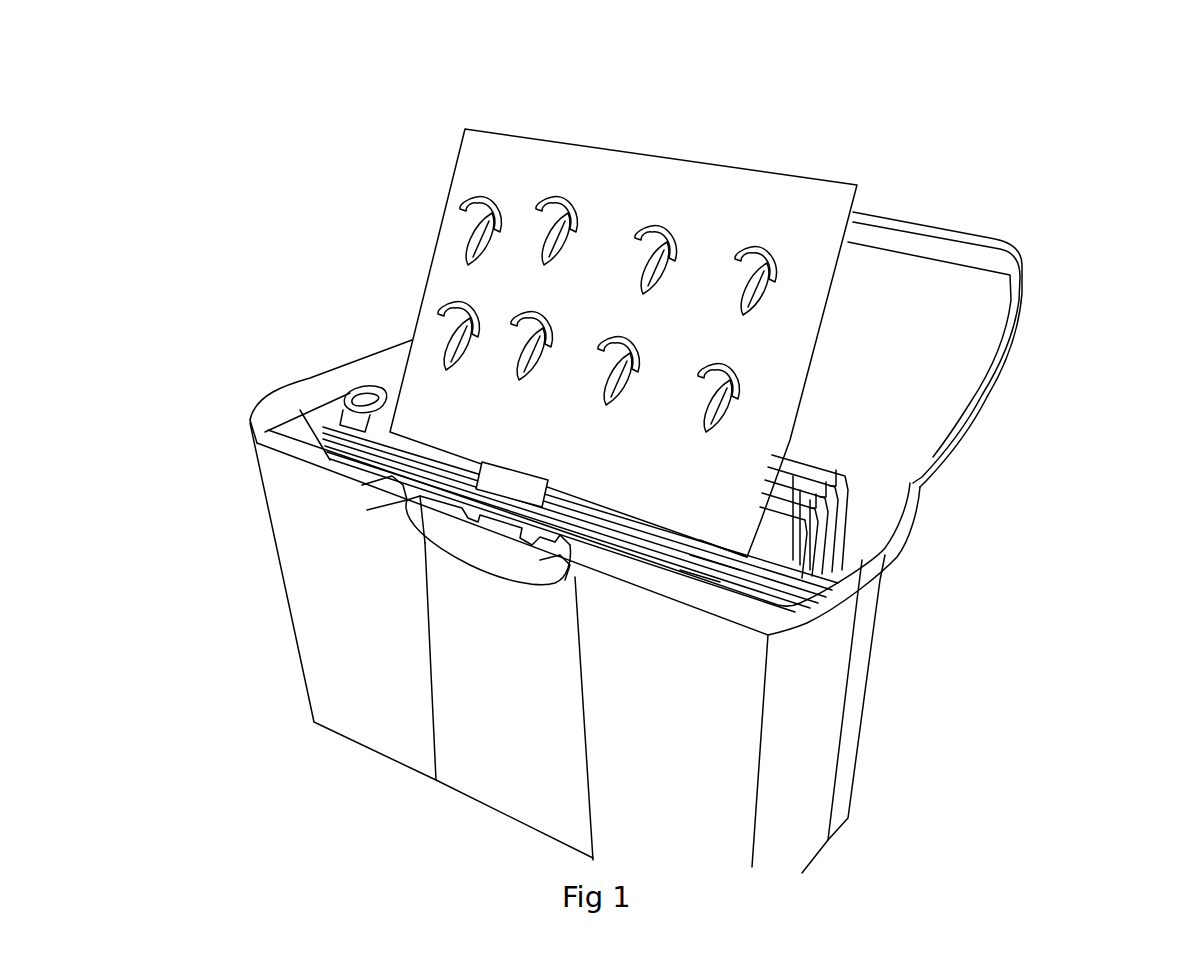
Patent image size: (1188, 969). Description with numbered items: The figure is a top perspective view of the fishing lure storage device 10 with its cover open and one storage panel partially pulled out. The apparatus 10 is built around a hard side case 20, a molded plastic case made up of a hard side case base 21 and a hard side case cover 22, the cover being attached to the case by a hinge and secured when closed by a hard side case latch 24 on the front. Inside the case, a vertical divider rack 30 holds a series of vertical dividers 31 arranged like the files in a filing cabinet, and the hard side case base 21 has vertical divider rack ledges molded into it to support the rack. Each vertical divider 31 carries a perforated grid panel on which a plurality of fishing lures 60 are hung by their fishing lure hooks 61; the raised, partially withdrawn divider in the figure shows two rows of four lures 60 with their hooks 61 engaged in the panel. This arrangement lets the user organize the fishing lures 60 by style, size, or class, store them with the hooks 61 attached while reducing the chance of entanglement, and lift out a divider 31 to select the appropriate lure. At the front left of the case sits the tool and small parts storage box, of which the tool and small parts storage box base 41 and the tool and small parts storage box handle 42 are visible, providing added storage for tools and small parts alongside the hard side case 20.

The fishing lure storage device 10 is at (1112, 197).
The hard side case 20 is at (300, 708).
The hard side case base 21 is at (290, 615).
The hard side case cover 22 is at (968, 462).
The hard side case latch 24 is at (408, 537).
The vertical divider rack 30 is at (455, 150).
The vertical dividers 31 is at (806, 520).
The tool and small parts storage box base 41 is at (383, 386).
The tool and small parts storage box handle 42 is at (345, 392).
The fishing lures 60 is at (503, 330).
The fishing lure hooks 61 is at (470, 198).